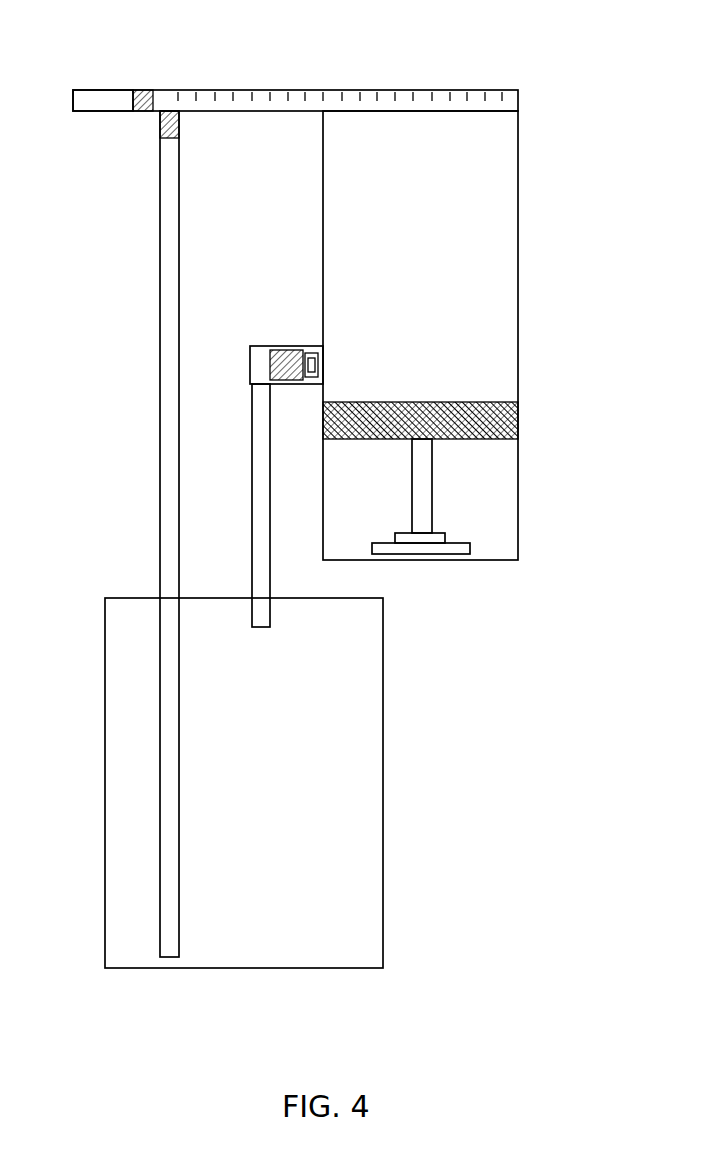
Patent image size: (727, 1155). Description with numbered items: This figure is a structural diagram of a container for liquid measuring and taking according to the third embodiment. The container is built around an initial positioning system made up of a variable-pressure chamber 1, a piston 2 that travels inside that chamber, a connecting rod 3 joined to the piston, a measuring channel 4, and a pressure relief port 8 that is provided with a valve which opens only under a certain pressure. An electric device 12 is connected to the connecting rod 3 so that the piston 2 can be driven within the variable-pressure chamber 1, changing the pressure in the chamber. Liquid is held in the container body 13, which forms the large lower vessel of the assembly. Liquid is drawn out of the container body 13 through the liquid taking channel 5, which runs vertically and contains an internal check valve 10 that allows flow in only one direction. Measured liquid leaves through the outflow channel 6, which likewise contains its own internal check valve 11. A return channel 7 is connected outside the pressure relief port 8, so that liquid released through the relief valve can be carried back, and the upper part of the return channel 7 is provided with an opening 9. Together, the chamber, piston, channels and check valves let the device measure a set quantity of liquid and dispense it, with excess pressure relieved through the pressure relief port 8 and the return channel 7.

The variable-pressure chamber 1 is at (500, 213).
The piston 2 is at (520, 410).
The connecting rod 3 is at (420, 512).
The measuring channel 4 is at (332, 92).
The liquid taking channel 5 is at (172, 405).
The outflow channel 6 is at (97, 100).
The return channel 7 is at (257, 400).
The pressure relief port 8 is at (300, 357).
The opening 9 is at (263, 355).
The internal check valve 10 is at (162, 130).
The internal check valve 11 is at (150, 105).
The electric device 12 is at (443, 552).
The container body 13 is at (347, 837).